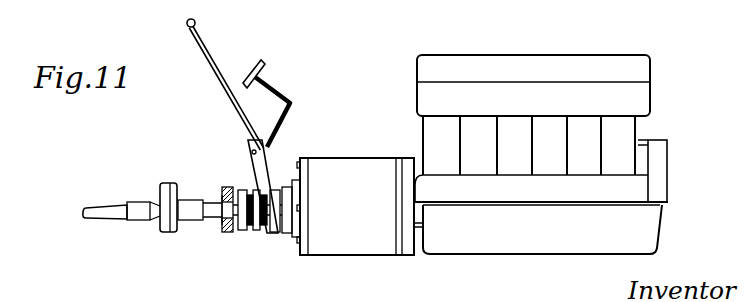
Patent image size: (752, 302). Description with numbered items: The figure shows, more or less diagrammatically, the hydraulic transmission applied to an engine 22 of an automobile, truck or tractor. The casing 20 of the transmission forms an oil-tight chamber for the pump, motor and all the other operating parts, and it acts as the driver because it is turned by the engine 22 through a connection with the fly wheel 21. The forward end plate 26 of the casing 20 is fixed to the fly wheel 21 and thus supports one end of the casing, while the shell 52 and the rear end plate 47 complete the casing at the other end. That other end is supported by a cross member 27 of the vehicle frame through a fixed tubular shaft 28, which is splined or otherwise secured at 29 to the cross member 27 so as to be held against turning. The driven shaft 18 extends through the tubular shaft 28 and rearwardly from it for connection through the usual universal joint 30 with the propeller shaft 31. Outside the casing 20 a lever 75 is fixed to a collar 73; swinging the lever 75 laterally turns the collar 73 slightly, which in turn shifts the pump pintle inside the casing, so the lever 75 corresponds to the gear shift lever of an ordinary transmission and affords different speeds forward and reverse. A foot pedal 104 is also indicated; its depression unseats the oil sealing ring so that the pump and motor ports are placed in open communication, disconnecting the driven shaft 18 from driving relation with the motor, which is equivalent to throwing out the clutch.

The engine 22 is at (538, 66).
The casing 20 is at (357, 170).
The fly wheel 21 is at (405, 165).
The forward end plate 26 is at (396, 230).
The shell 52 is at (340, 255).
The rear end plate 47 is at (303, 229).
The collar 73 is at (278, 233).
The tubular shaft 28 is at (258, 232).
The cross member 27 is at (228, 233).
The driven shaft 18 is at (215, 217).
The propeller shaft 31 is at (95, 219).
The universal joint 30 is at (162, 190).
The splined connection 29 is at (222, 195).
The lever 75 is at (226, 88).
The foot pedal 104 is at (272, 82).